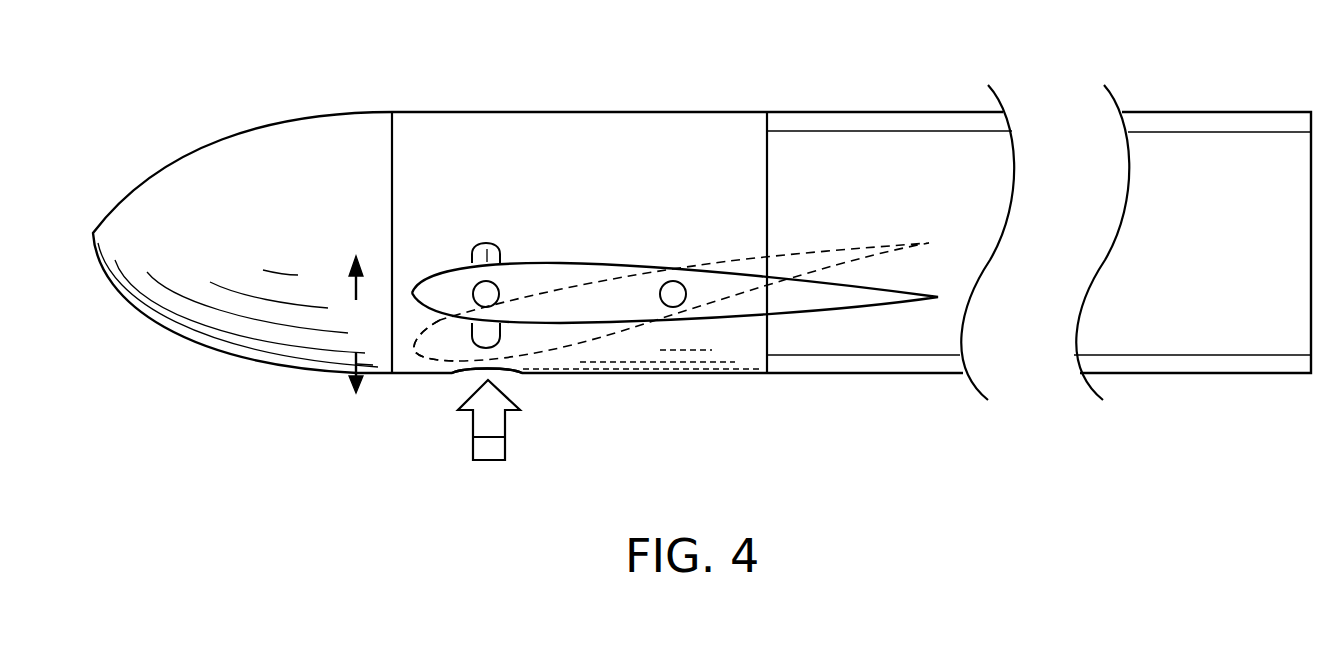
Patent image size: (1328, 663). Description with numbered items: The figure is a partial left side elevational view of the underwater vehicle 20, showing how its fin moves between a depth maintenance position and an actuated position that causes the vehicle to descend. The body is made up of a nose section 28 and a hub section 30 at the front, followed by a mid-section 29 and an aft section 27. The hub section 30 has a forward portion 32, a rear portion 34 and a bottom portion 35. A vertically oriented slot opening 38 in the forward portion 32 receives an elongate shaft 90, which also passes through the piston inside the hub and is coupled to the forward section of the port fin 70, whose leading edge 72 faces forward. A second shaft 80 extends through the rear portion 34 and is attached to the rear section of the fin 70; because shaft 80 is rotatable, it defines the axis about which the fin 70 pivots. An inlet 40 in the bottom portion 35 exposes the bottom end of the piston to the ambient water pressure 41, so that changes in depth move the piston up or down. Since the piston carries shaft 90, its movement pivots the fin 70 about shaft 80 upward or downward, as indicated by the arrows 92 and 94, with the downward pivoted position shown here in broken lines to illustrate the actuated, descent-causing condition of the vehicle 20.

The underwater vehicle 20 is at (178, 403).
The aft section 27 is at (1215, 112).
The nose section 28 is at (181, 151).
The mid-section 29 is at (860, 112).
The hub section 30 is at (540, 112).
The forward portion 32 is at (437, 112).
The rear portion 34 is at (731, 112).
The bottom portion 35 is at (563, 375).
The opening 38 is at (496, 256).
The inlet 40 is at (455, 374).
The ambient water pressure 41 is at (500, 447).
The port fin 70 is at (620, 338).
The leading edge 72 is at (425, 357).
The shaft 80 is at (674, 295).
The shaft 90 is at (488, 296).
The arrow 92 is at (352, 280).
The arrow 94 is at (350, 372).